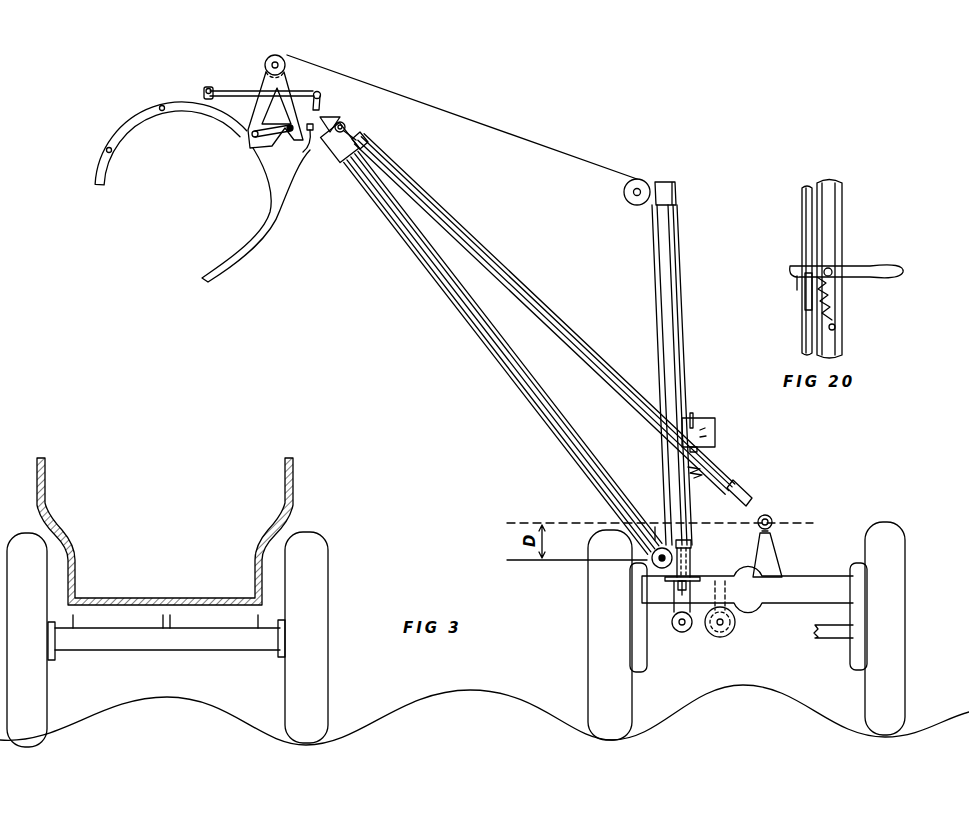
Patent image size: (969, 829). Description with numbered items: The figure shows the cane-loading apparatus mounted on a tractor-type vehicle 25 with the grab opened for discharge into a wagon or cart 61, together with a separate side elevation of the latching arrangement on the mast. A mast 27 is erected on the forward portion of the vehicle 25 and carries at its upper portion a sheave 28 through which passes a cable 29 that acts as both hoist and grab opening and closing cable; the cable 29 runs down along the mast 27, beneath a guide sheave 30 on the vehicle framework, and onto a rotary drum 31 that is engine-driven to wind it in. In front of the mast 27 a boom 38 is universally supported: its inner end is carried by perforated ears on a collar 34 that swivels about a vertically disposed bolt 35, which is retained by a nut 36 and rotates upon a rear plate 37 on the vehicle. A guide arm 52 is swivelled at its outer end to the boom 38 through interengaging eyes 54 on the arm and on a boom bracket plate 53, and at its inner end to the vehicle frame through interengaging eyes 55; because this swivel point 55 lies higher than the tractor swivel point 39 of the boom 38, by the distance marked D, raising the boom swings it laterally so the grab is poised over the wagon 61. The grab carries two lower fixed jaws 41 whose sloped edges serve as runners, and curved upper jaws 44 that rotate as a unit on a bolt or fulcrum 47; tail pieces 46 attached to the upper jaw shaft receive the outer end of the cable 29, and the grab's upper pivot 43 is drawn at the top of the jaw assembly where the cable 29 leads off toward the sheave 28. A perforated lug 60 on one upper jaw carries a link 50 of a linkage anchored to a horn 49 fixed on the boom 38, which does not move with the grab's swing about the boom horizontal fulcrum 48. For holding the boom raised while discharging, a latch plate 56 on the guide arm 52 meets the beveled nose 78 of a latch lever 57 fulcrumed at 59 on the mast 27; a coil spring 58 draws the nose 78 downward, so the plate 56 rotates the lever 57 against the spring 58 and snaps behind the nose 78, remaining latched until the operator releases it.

In FIG. 3, the vehicle 25 is at (838, 590).
In FIG. 3, the mast 27 is at (653, 262).
In FIG. 20, the mast 27 is at (832, 222).
In FIG. 3, the sheave 28 is at (623, 192).
In FIG. 3, the cable 29 is at (524, 132).
In FIG. 3, the guide sheave 30 is at (682, 632).
In FIG. 3, the rotary drum 31 is at (735, 628).
In FIG. 3, the collar 34 is at (690, 560).
In FIG. 3, the bolt 35 is at (691, 544).
In FIG. 3, the nut 36 is at (680, 590).
In FIG. 3, the rear plate 37 is at (712, 572).
In FIG. 3, the boom 38 is at (556, 442).
In FIG. 3, the tractor swivel point 39 is at (655, 527).
In FIG. 3, the lower fixed jaws 41 is at (285, 185).
In FIG. 3, the pivot pin 43 is at (283, 59).
In FIG. 3, the upper jaws 44 is at (183, 108).
In FIG. 3, the tail pieces 46 is at (268, 142).
In FIG. 3, the bolt or fulcrum 47 is at (252, 134).
In FIG. 3, the boom horizontal fulcrum 48 is at (307, 152).
In FIG. 3, the horn 49 is at (320, 102).
In FIG. 3, the link 50 is at (258, 90).
In FIG. 3, the guide arm 52 is at (622, 352).
In FIG. 20, the guide arm 52 is at (805, 247).
In FIG. 3, the boom bracket plate 53 is at (345, 122).
In FIG. 3, the interengaging eyes 54 is at (360, 136).
In FIG. 3, the interengaging eyes 55 is at (772, 519).
In FIG. 3, the latch plate 56 is at (716, 433).
In FIG. 20, the latch plate 56 is at (805, 295).
In FIG. 3, the latch lever 57 is at (693, 418).
In FIG. 20, the latch lever 57 is at (845, 275).
In FIG. 3, the coil spring 58 is at (698, 450).
In FIG. 20, the coil spring 58 is at (835, 315).
In FIG. 20, the fulcrum 59 is at (832, 270).
In FIG. 3, the perforated lug 60 is at (205, 92).
In FIG. 3, the wagon or cart 61 is at (287, 508).
In FIG. 20, the beveled nose 78 is at (797, 280).